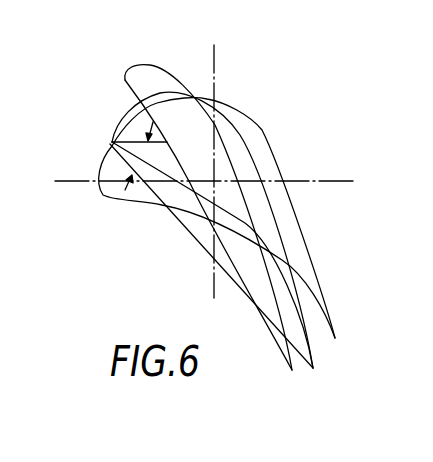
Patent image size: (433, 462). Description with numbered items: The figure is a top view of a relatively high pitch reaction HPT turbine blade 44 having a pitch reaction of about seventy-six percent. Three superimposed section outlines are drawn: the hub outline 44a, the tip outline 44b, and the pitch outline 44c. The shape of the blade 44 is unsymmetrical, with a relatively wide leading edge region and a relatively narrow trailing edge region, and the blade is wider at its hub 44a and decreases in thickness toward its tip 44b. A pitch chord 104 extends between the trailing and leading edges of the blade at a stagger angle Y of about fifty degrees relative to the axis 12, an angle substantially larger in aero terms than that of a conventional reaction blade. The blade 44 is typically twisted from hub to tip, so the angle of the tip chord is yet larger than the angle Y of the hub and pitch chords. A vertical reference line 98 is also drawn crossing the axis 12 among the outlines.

The axis 12 is at (325, 178).
The HPT turbine blade 44 is at (189, 217).
The hub outline 44a is at (103, 197).
The tip outline 44b is at (131, 80).
The pitch outline 44c is at (112, 142).
The stacking axis line 98 is at (215, 58).
The pitch chord 104 is at (183, 227).
The stagger angle Y is at (113, 202).